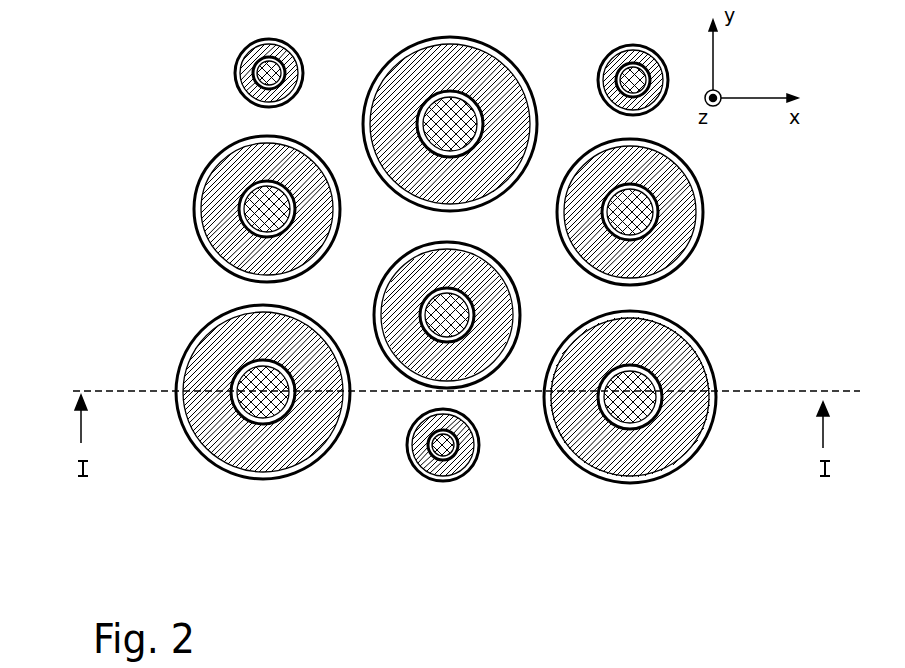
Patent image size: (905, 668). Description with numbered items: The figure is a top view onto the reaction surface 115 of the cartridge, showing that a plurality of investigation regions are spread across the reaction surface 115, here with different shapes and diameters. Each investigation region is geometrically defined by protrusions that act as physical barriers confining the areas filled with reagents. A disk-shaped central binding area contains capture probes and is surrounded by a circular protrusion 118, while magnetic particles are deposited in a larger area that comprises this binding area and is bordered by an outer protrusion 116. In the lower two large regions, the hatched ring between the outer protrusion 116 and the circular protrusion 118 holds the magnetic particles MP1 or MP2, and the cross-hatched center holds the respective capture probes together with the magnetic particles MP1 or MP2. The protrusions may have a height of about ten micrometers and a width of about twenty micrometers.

The reaction surface 115 is at (148, 117).
The outer protrusion 116 is at (217, 320).
The circular protrusion 118 is at (237, 383).
The magnetic particles MP1 is at (287, 447).
The magnetic particles MP2 is at (643, 462).